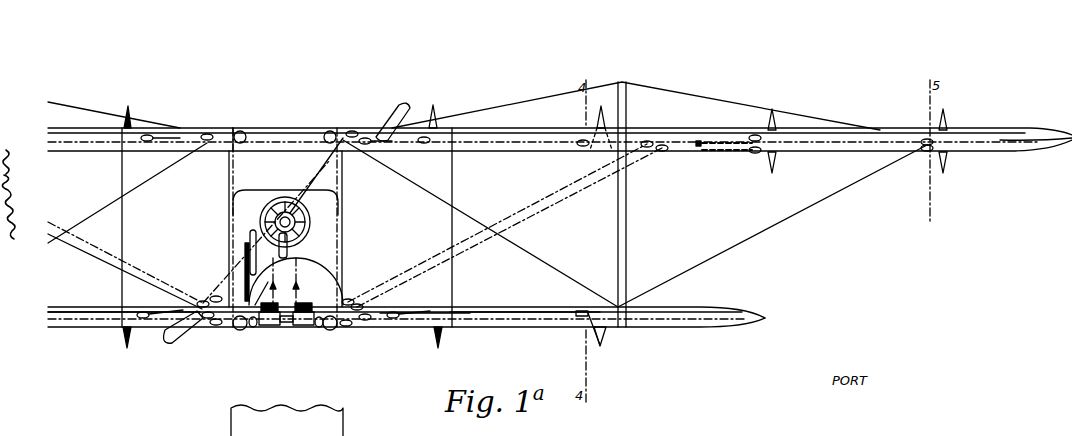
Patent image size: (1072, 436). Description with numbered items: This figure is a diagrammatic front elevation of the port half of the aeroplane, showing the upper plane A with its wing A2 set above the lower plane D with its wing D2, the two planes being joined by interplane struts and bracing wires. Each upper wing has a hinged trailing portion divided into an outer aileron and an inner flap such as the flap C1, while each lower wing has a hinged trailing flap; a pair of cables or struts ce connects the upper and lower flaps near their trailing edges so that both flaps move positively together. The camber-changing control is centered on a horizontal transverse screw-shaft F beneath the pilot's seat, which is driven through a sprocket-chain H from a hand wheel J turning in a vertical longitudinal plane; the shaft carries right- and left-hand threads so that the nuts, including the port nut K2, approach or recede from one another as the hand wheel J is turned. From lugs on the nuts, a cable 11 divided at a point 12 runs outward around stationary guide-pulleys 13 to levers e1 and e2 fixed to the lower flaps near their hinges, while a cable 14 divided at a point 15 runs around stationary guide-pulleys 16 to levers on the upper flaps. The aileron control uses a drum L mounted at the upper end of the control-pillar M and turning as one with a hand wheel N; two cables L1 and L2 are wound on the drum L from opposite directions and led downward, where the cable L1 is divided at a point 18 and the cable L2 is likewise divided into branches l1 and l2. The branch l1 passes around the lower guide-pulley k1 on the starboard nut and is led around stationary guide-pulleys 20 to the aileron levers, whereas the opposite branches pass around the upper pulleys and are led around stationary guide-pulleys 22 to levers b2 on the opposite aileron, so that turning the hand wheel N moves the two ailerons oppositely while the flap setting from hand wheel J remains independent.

The upper plane A is at (288, 127).
The wing of the upper plane A2 is at (1020, 130).
The lower plane D is at (406, 330).
The wing of the lower plane D2 is at (706, 329).
The cables or struts ce is at (122, 212).
The cable 14 is at (82, 147).
The branching point 15 is at (182, 144).
The stationary guide-pulleys 16 is at (207, 134).
The cable 11 is at (85, 308).
The branching point 12 is at (183, 308).
The stationary guide-pulleys 13 is at (207, 322).
The division point 18 is at (282, 281).
The stationary guide-pulleys 20 is at (203, 300).
The stationary guide-pulleys 22 is at (217, 295).
The flap C1 is at (131, 116).
The levers b2 is at (776, 164).
The levers e1 is at (124, 345).
The levers e2 is at (441, 343).
The cable branch l1 is at (75, 236).
The cable branch l2 is at (549, 207).
The drum L is at (285, 212).
The cable L1 is at (261, 293).
The cable L2 is at (297, 278).
The hand wheel N is at (309, 221).
The control-pillar M is at (289, 246).
The hand wheel J is at (252, 229).
The sprocket-chain H is at (244, 243).
The screw-shaft F is at (286, 324).
The guide-pulley k1 is at (264, 327).
The port nut K2 is at (306, 327).